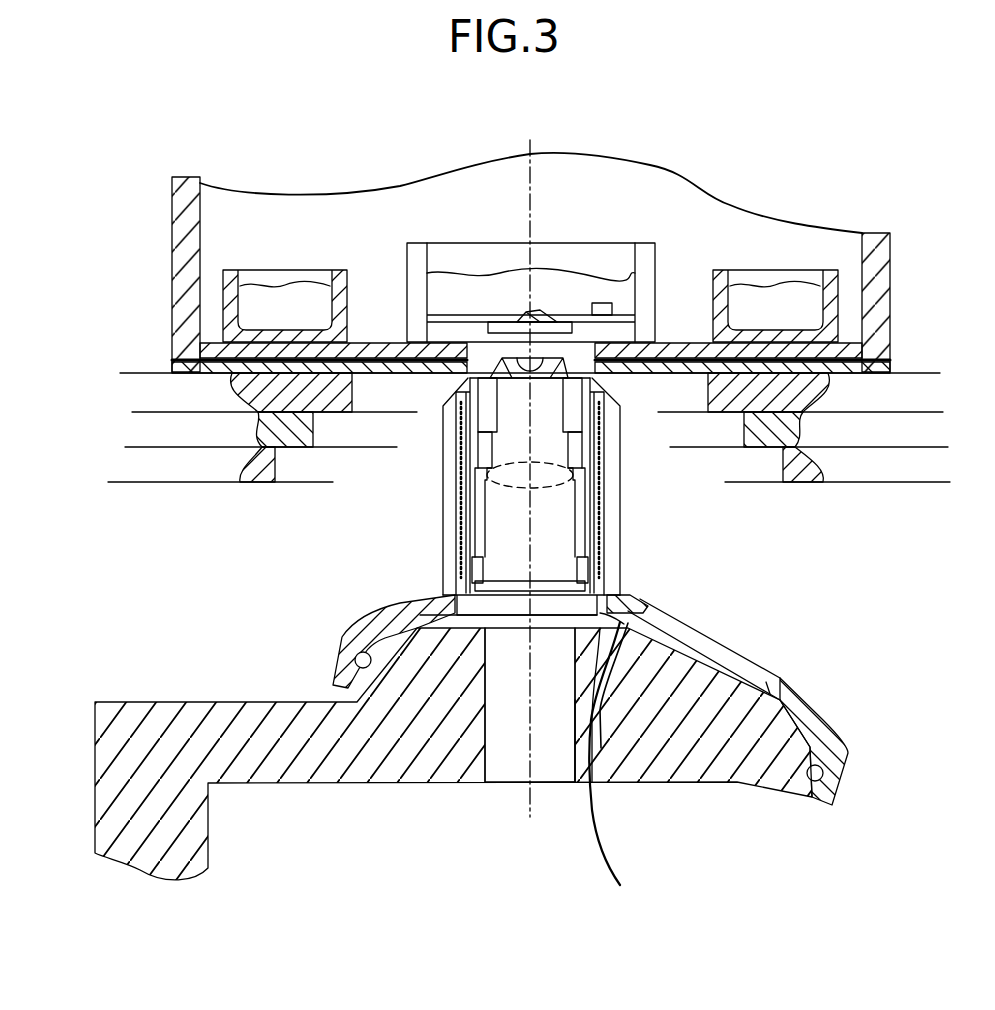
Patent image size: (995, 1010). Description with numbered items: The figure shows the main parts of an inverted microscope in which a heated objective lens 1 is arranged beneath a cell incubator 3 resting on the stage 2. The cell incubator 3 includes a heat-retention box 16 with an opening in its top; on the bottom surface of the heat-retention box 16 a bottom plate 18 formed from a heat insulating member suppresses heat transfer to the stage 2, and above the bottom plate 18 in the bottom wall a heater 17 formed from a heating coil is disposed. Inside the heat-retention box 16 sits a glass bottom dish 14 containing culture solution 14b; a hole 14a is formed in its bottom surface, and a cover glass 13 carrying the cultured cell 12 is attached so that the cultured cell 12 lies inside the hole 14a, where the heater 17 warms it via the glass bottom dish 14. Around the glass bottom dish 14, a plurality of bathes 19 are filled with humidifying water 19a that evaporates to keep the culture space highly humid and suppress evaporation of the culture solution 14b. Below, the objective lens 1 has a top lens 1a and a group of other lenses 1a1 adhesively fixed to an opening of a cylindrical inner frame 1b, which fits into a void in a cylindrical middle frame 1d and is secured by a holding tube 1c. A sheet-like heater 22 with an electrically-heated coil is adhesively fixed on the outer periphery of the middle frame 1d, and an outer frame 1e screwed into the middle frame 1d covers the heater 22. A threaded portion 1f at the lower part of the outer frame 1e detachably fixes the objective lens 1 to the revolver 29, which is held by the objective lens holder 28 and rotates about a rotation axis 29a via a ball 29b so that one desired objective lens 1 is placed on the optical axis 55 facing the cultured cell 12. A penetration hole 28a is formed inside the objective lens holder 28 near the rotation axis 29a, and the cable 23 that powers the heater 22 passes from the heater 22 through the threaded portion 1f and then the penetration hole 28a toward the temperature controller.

The objective lens 1 is at (425, 555).
The top lens 1a is at (545, 378).
The group of other lenses 1a1 is at (590, 482).
The inner frame 1b is at (483, 447).
The holding tube 1c is at (478, 512).
The middle frame 1d is at (600, 450).
The outer frame 1e is at (605, 510).
The threaded portion 1f is at (630, 605).
The stage 2 is at (118, 373).
The cell incubator 3 is at (172, 218).
The cultured cell 12 is at (545, 318).
The cover glass 13 is at (497, 330).
The glass bottom dish 14 is at (655, 291).
The hole 14a is at (603, 310).
The culture solution 14b is at (458, 288).
The heat-retention box 16 is at (185, 280).
The heater 17 is at (172, 352).
The bottom plate 18 is at (172, 370).
The bathes 19 is at (347, 299).
The humidifying water 19a is at (290, 300).
The sheet-like heater 22 is at (600, 540).
The cable 23 is at (600, 832).
The objective lens holder 28 is at (100, 738).
The penetration hole 28a is at (592, 758).
The revolver 29 is at (800, 727).
The rotation axis 29a is at (572, 763).
The ball 29b is at (825, 775).
The optical axis 55 is at (530, 680).